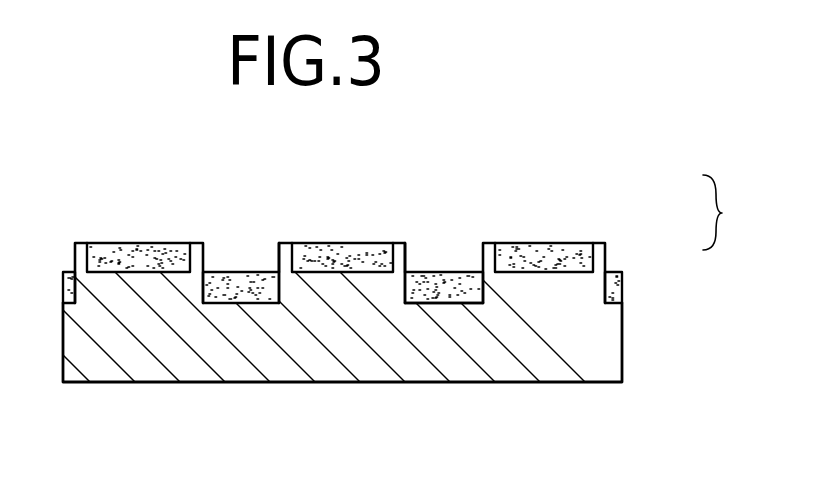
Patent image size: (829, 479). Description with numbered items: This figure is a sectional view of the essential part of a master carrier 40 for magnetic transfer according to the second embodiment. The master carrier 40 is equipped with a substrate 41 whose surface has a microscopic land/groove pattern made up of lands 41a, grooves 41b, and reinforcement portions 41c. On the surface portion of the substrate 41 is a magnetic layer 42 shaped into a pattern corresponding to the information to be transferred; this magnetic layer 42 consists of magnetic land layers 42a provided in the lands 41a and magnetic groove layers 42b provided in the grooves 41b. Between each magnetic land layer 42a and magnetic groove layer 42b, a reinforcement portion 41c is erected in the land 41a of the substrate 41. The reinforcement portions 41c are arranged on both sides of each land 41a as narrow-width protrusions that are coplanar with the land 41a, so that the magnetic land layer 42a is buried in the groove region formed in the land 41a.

The master carrier 40 is at (86, 177).
The substrate 41 is at (615, 358).
The land 41a is at (347, 273).
The groove 41b is at (446, 303).
The reinforcement portion 41c is at (281, 243).
The magnetic layer 42 is at (732, 212).
The magnetic land layer 42a is at (343, 243).
The magnetic groove layer 42b is at (229, 270).